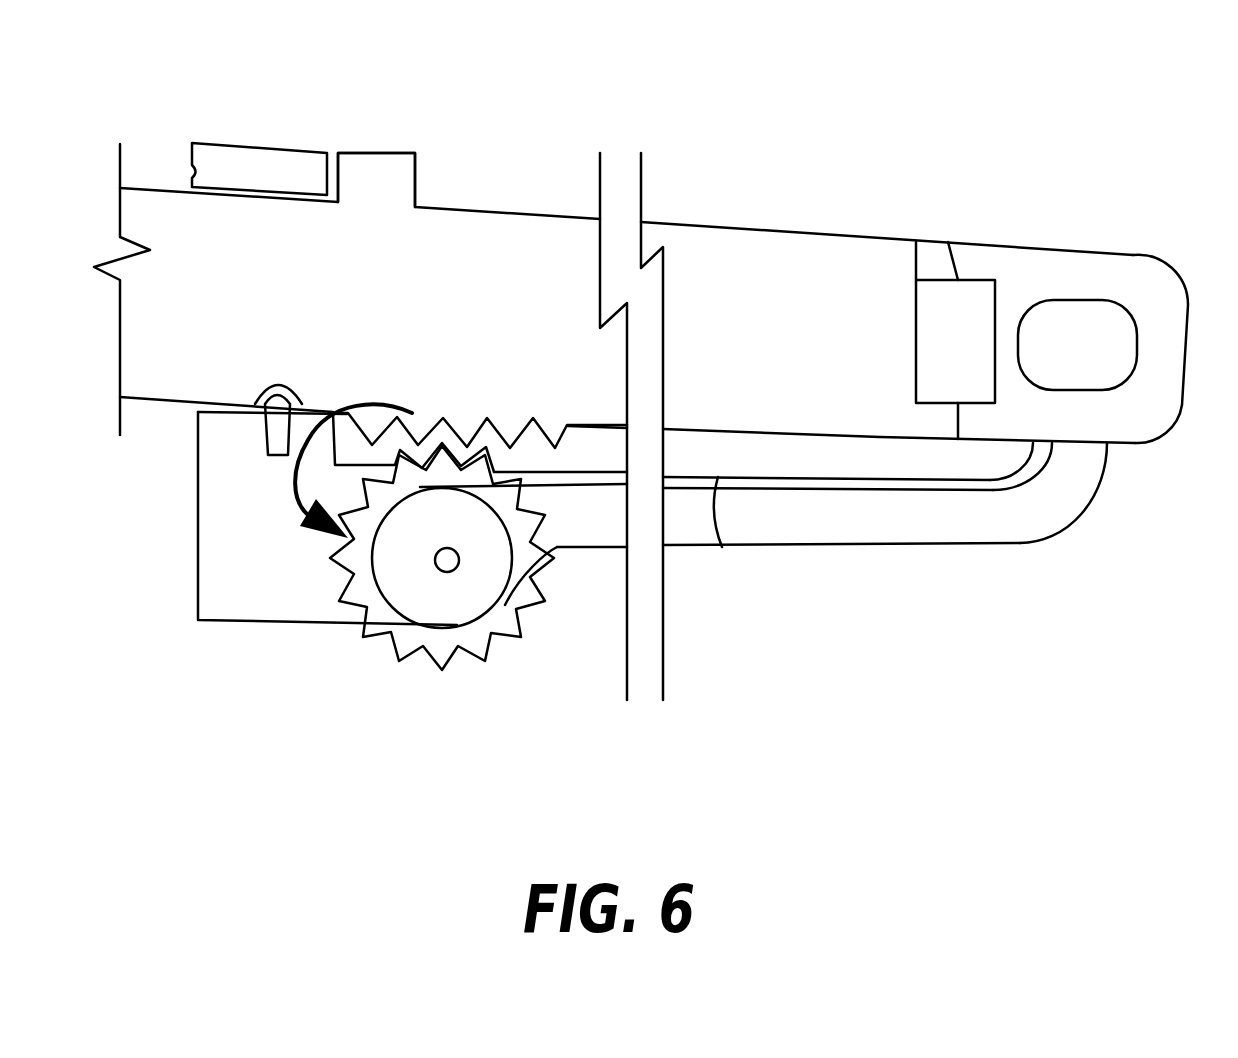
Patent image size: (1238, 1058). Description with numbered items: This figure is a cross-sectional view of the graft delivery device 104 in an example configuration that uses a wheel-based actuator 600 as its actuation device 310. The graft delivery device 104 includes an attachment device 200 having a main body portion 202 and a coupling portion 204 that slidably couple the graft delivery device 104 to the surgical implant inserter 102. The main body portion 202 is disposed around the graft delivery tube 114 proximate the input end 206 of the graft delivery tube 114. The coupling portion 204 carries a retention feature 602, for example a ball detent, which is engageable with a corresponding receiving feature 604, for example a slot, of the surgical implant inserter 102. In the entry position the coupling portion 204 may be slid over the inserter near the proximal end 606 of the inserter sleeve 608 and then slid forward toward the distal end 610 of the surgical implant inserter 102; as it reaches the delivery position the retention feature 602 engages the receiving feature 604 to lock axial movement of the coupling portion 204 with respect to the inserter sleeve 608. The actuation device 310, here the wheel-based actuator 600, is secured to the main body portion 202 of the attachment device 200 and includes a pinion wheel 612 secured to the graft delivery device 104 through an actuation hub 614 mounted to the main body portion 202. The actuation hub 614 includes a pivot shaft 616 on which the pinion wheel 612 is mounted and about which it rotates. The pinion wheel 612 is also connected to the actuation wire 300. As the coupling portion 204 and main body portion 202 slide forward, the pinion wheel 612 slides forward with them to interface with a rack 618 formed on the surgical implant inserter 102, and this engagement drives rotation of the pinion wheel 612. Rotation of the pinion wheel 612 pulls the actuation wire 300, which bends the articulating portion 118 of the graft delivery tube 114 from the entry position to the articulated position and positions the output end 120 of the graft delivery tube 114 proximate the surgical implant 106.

The surgical implant inserter 102 is at (536, 258).
The graft delivery device 104 is at (275, 650).
The surgical implant 106 is at (1115, 277).
The graft delivery tube 114 is at (928, 517).
The articulating portion 118 is at (1093, 537).
The output end 120 is at (1093, 448).
The attachment device 200 is at (218, 556).
The main body portion 202 is at (263, 592).
The coupling portion 204 is at (222, 433).
The input end 206 is at (375, 716).
The actuation wire 300 is at (602, 487).
The actuation device 310 is at (503, 694).
The wheel-based actuator 600 is at (472, 697).
The retention feature 602 is at (262, 400).
The receiving feature 604 is at (264, 396).
The proximal end 606 is at (177, 131).
The inserter sleeve 608 is at (312, 130).
The distal end 610 is at (868, 200).
The pinion wheel 612 is at (378, 610).
The actuation hub 614 is at (430, 600).
The pivot shaft 616 is at (450, 561).
The rack 618 is at (477, 425).